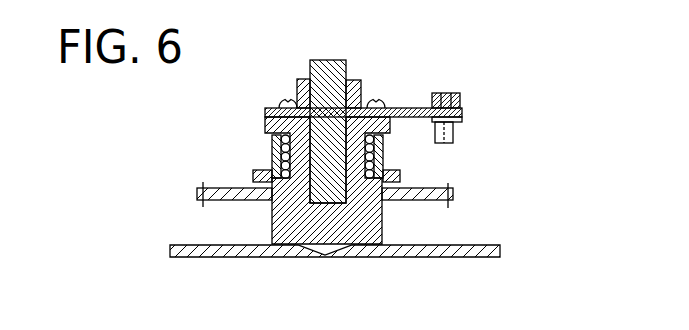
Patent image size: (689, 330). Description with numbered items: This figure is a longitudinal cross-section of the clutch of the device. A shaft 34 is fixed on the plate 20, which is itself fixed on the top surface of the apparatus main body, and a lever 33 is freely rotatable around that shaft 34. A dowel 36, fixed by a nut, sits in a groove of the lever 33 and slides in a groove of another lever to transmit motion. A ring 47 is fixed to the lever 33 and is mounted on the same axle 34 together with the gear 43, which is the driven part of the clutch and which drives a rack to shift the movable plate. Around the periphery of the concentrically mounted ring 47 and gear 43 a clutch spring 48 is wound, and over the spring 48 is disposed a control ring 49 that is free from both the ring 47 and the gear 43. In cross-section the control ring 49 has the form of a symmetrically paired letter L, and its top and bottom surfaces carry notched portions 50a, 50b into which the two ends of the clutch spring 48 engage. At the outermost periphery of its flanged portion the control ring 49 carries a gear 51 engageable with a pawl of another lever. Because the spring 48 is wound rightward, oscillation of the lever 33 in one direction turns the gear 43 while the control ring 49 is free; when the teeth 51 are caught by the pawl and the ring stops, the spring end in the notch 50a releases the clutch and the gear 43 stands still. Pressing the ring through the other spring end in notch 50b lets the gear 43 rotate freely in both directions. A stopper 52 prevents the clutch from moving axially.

The plate 20 is at (480, 245).
The lever 33 is at (423, 108).
The shaft 34 is at (325, 68).
The dowel 36 is at (453, 133).
The gear 43 is at (225, 200).
The ring 47 is at (277, 108).
The clutch spring 48 is at (280, 150).
The control ring 49 is at (272, 163).
The notched portion 50a is at (385, 120).
The notched portion 50b is at (327, 180).
The gear 51 is at (400, 177).
The stopper 52 is at (353, 79).